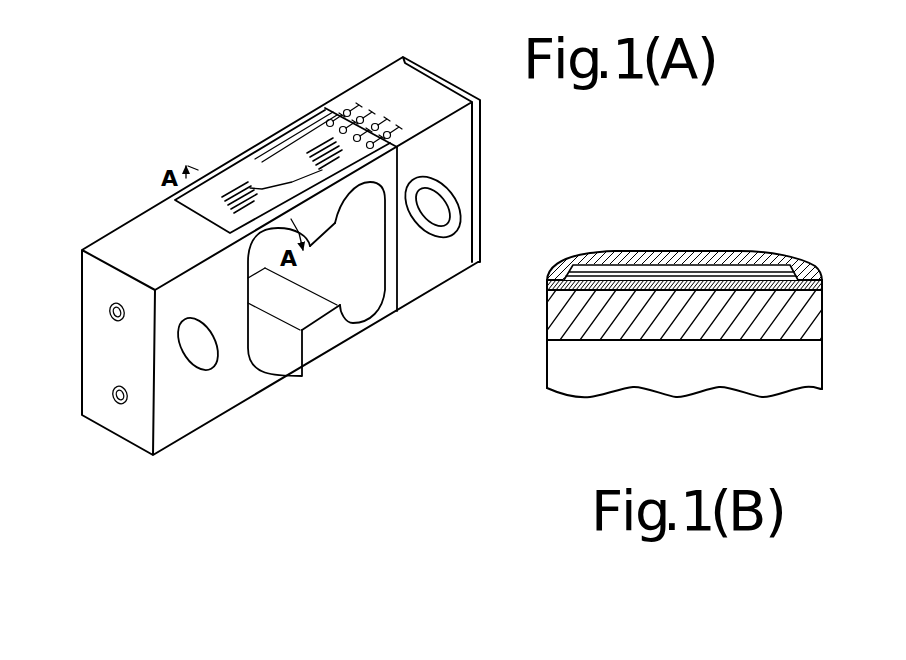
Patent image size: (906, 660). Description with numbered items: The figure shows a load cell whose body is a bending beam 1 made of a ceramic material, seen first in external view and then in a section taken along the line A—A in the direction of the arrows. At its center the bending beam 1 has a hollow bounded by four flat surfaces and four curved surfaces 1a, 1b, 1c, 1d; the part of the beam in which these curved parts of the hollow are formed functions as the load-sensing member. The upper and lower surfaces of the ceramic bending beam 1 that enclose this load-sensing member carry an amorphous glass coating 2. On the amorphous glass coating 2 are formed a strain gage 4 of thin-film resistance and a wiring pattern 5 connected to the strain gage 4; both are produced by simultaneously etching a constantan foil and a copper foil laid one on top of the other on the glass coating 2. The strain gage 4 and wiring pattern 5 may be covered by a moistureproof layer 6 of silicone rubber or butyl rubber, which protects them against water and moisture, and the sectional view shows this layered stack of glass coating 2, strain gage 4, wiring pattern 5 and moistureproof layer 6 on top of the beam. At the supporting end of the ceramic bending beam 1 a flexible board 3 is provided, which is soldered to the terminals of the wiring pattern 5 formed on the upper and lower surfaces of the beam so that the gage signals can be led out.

In FIG. 1A, the bending beam 1 is at (88, 246).
In FIG. 1B, the bending beam 1 is at (805, 315).
In FIG. 1A, the curved surface of hollow 1a is at (271, 244).
In FIG. 1A, the curved surface of hollow 1b is at (259, 364).
In FIG. 1A, the curved surface of hollow 1c is at (372, 280).
In FIG. 1A, the curved surface of hollow 1d is at (361, 194).
In FIG. 1A, the amorphous glass coating 2 is at (210, 192).
In FIG. 1B, the amorphous glass coating 2 is at (811, 285).
In FIG. 1A, the flexible board 3 is at (417, 83).
In FIG. 1A, the strain gage 4 is at (245, 180).
In FIG. 1B, the strain gage 4 is at (797, 276).
In FIG. 1A, the wiring pattern 5 is at (297, 136).
In FIG. 1B, the wiring pattern 5 is at (791, 266).
In FIG. 1B, the moistureproof layer 6 is at (670, 251).